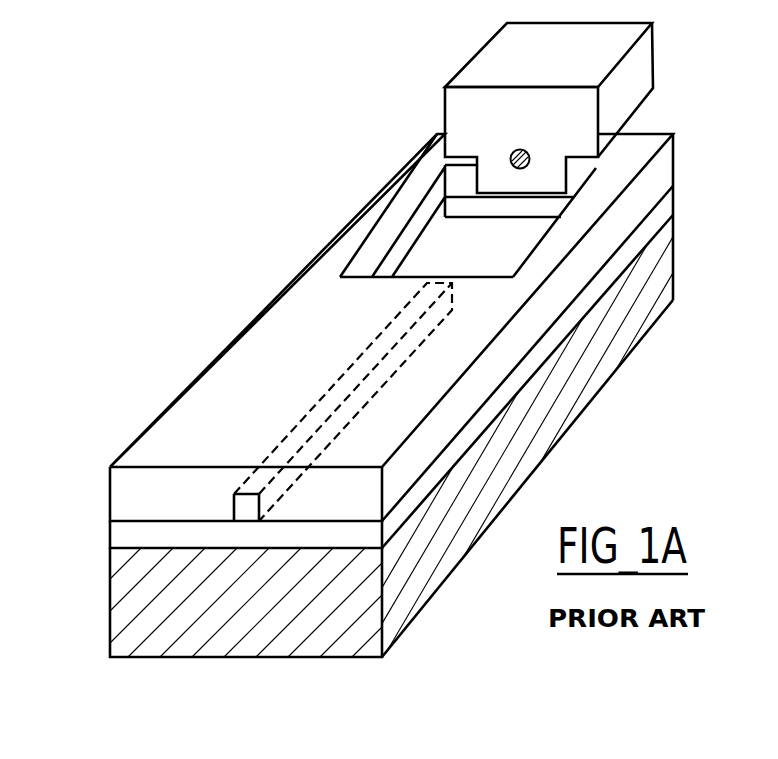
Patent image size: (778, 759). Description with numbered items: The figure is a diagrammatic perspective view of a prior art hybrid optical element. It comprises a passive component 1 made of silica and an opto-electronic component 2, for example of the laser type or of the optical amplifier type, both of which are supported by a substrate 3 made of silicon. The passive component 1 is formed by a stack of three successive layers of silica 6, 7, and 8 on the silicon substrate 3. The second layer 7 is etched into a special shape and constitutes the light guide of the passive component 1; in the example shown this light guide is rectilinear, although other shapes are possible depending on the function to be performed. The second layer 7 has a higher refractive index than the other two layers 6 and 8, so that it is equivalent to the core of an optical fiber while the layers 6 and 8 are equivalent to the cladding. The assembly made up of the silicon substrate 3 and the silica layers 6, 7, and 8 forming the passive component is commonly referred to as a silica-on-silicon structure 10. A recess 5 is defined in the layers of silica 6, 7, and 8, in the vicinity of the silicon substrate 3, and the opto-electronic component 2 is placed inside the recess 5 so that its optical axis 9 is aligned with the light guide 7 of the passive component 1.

The silica-on-silicon structure 10 is at (337, 394).
The passive component 1 is at (359, 348).
The third layer of silica 8 is at (370, 326).
The second layer of silica 7 is at (234, 506).
The first layer of silica 6 is at (70, 440).
The substrate 3 is at (50, 434).
The recess 5 is at (453, 249).
The opto-electronic component 2 is at (516, 108).
The optical axis 9 is at (517, 150).